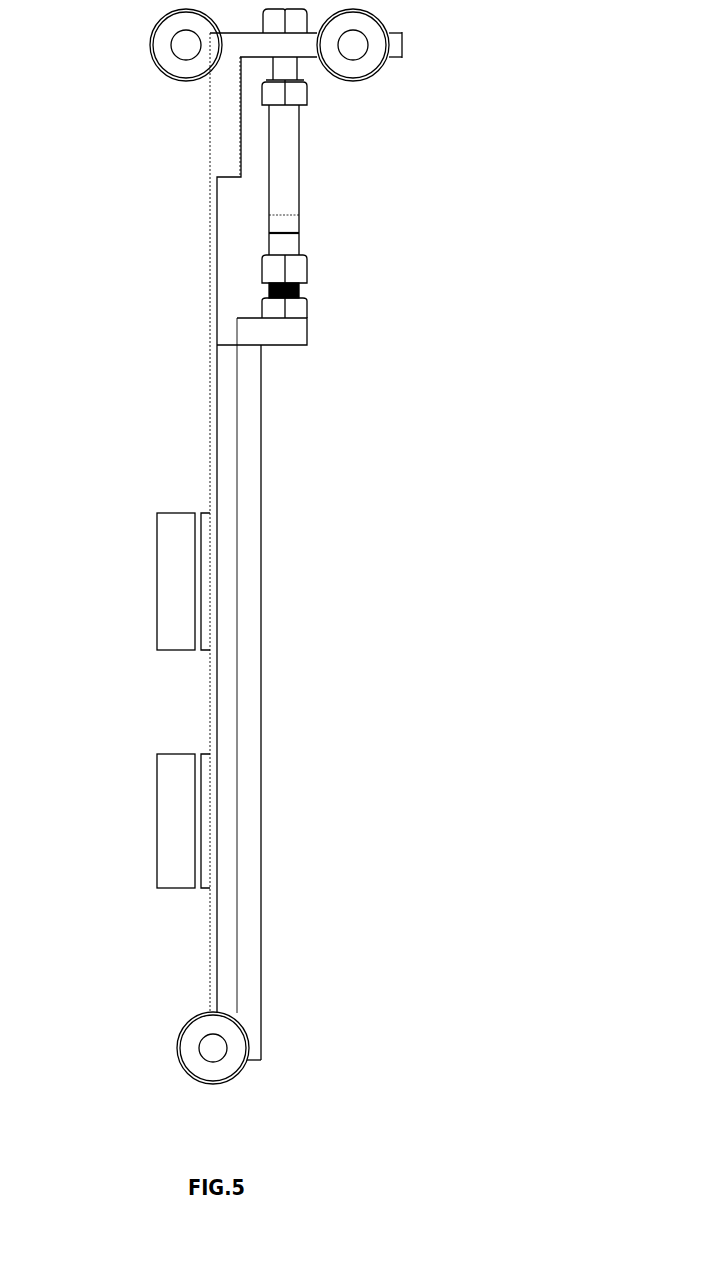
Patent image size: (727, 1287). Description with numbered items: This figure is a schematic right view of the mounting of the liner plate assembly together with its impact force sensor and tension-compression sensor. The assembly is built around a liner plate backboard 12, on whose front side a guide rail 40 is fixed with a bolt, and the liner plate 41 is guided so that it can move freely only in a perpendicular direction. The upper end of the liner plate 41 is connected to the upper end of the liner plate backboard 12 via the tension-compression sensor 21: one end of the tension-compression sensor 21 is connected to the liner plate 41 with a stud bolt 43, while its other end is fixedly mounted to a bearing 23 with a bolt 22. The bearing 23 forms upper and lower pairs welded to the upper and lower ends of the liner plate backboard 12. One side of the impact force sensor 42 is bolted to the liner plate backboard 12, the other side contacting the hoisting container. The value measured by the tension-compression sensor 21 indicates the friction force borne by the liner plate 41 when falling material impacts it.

The liner plate backboard 12 is at (212, 952).
The tension-compression sensor 21 is at (287, 180).
The bolt 22 is at (284, 70).
The bearing 23 is at (207, 42).
The guide rail 40 is at (225, 900).
The liner plate 41 is at (247, 846).
The impact force sensor 42 is at (180, 822).
The stud bolt 43 is at (268, 296).